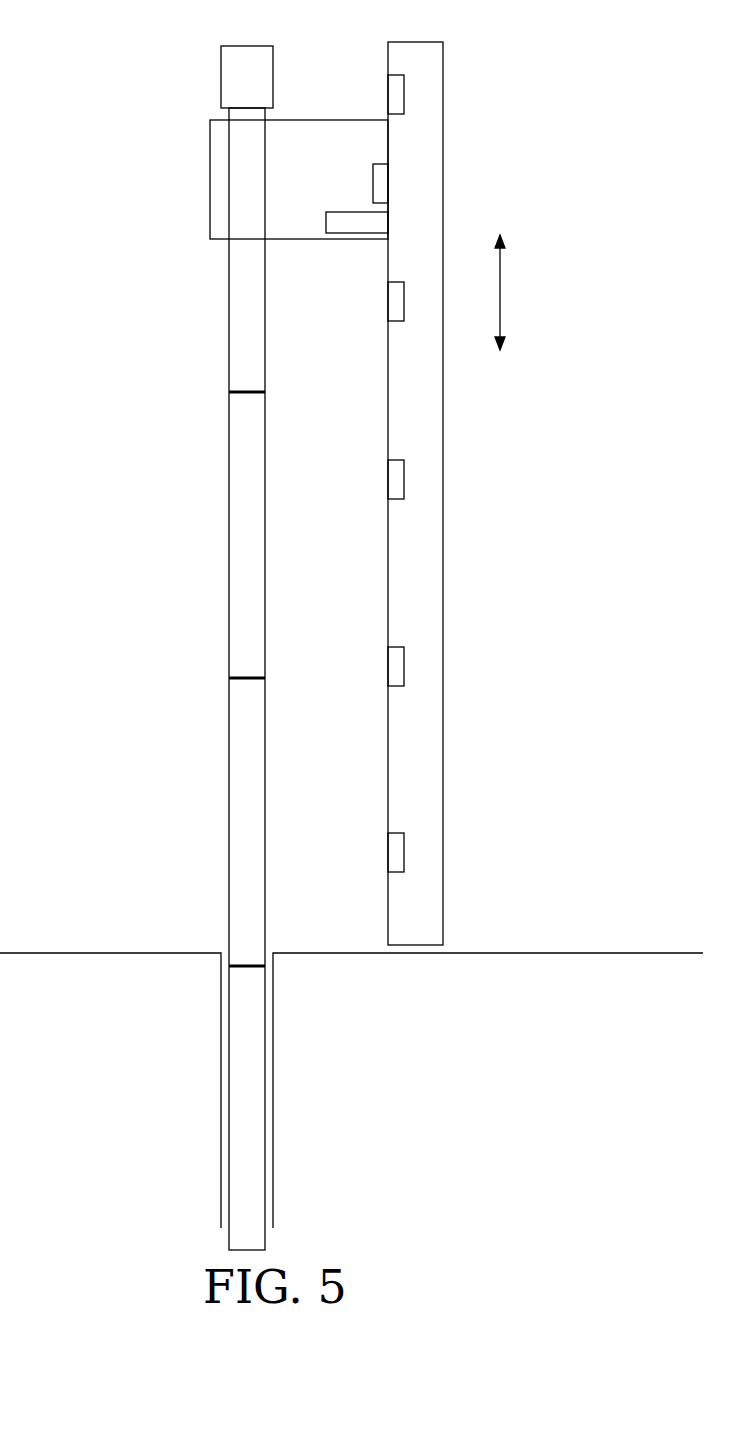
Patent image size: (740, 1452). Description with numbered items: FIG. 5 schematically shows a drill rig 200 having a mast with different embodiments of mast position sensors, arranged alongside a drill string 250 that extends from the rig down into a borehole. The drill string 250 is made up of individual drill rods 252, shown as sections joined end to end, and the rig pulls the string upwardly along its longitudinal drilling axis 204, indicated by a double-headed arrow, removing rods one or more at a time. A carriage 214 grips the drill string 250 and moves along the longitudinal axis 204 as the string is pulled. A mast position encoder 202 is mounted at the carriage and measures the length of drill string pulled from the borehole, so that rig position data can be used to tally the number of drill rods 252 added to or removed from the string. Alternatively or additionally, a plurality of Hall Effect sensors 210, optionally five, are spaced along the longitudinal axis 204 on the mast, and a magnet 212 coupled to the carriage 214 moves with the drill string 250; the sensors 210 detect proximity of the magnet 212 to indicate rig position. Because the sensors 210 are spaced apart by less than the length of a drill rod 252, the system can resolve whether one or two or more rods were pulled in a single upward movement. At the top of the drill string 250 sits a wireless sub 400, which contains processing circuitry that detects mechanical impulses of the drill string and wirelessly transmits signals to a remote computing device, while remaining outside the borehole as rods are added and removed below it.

The drill rig 200 is at (502, 100).
The mast position encoder 202 is at (367, 225).
The longitudinal axis 204 is at (510, 273).
The Hall Effect sensors 210 is at (397, 92).
The magnet 212 is at (382, 177).
The carriage 214 is at (222, 187).
The drill string 250 is at (197, 349).
The drill rod 252 is at (237, 366).
The wireless sub 400 is at (242, 84).